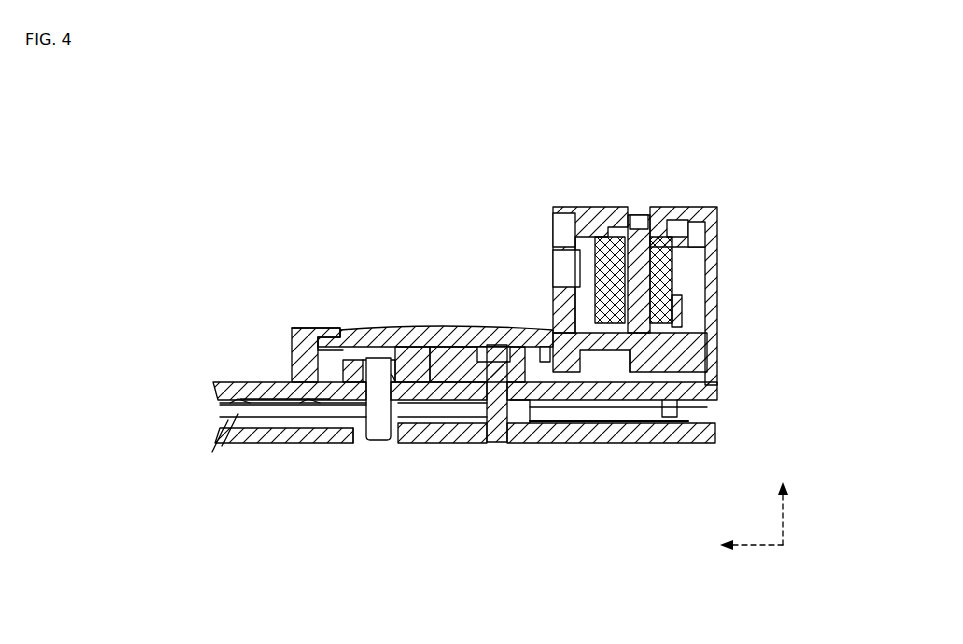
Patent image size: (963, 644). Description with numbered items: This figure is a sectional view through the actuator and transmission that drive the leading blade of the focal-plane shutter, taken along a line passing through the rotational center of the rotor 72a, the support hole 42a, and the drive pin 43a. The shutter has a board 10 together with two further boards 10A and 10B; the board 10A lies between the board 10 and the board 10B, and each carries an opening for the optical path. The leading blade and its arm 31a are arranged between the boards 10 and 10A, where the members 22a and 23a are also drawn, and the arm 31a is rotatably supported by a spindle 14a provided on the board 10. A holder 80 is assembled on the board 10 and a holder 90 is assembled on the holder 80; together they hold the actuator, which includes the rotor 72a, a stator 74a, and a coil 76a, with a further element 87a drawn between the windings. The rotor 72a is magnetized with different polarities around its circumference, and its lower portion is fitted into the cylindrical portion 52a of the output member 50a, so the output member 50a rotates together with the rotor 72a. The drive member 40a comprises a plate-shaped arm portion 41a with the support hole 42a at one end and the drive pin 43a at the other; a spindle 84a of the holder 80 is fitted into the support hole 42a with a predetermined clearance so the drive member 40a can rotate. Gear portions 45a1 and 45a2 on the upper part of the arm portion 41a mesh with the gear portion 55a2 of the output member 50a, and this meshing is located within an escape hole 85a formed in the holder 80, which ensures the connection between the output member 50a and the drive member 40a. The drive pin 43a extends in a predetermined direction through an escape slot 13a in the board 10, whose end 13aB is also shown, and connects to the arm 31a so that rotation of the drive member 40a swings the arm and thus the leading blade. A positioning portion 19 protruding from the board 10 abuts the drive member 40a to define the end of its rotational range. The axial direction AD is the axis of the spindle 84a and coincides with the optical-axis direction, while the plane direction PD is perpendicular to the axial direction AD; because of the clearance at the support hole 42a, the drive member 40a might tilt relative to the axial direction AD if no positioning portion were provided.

The holder 90 is at (719, 222).
The cylindrical portion 52a is at (556, 250).
The coil 76a is at (567, 220).
The stator 74a is at (585, 228).
The contact portion 55a2 is at (553, 333).
The core 87a is at (640, 222).
The rotor 72a is at (686, 268).
The output member 50a is at (684, 310).
The holder 80 is at (282, 338).
The flange 19 is at (291, 328).
The drive member 40a is at (347, 330).
The arm portion 41a is at (371, 336).
The first engaging portion 45a1 is at (430, 340).
The arm 31a is at (428, 355).
The escape slot 13a is at (392, 372).
The spindle 84a is at (488, 362).
The support hole 42a is at (503, 340).
The drive pin 43a is at (380, 428).
The board 10 is at (719, 394).
The spindle 14a is at (490, 445).
The board 10B is at (657, 445).
The board 10A is at (611, 421).
The escape hole 85a is at (592, 358).
The second engaging portion 45a2 is at (524, 380).
The spring 22a is at (238, 404).
The spring 23a is at (290, 401).
The pawl end 13aB is at (358, 420).
The axial direction AD is at (786, 505).
The plane direction PD is at (744, 548).